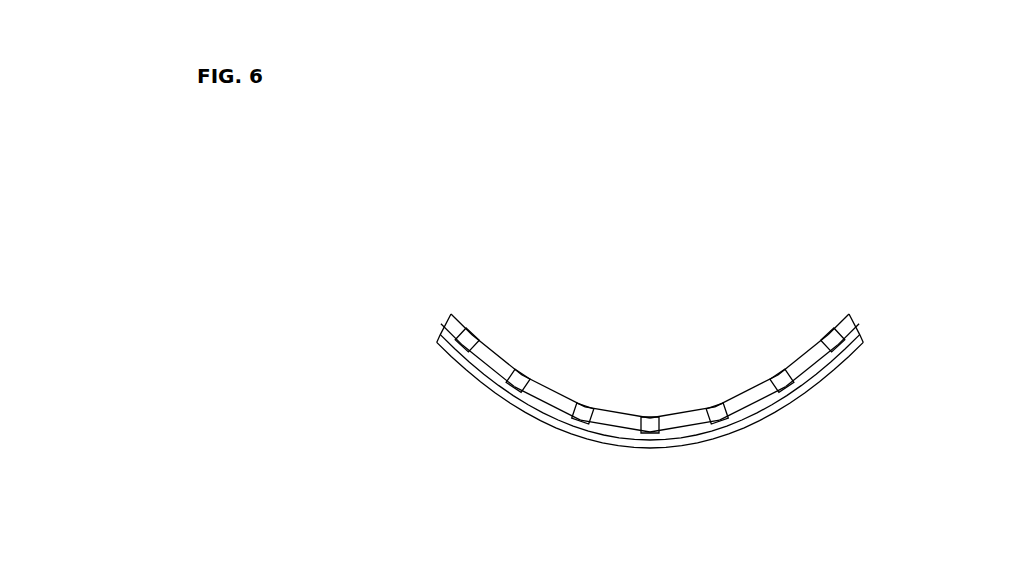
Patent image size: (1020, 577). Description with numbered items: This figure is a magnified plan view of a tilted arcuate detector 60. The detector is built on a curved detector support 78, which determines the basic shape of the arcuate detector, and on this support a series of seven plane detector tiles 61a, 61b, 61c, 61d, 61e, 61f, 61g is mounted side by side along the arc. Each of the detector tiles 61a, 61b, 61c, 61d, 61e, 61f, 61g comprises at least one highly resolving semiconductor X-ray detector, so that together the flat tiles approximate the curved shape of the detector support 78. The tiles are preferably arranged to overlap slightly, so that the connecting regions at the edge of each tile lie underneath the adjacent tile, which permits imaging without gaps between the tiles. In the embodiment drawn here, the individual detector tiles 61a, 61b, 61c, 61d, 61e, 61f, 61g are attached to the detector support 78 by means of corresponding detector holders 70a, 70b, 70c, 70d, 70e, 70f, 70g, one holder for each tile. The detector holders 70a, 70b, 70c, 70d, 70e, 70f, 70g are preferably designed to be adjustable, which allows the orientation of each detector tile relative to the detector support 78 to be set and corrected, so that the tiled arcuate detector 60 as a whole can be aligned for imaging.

The tilted arcuate detector 60 is at (448, 176).
The detector support 78 is at (437, 344).
The detector holder 70a is at (466, 368).
The detector holder 70b is at (516, 400).
The detector holder 70c is at (587, 430).
The detector holder 70d is at (652, 434).
The detector holder 70e is at (720, 426).
The detector holder 70f is at (785, 397).
The detector holder 70g is at (840, 354).
The detector tile 61a is at (461, 352).
The detector tile 61b is at (514, 394).
The detector tile 61c is at (582, 427).
The detector tile 61d is at (654, 438).
The detector tile 61e is at (725, 424).
The detector tile 61f is at (792, 389).
The detector tile 61g is at (845, 347).